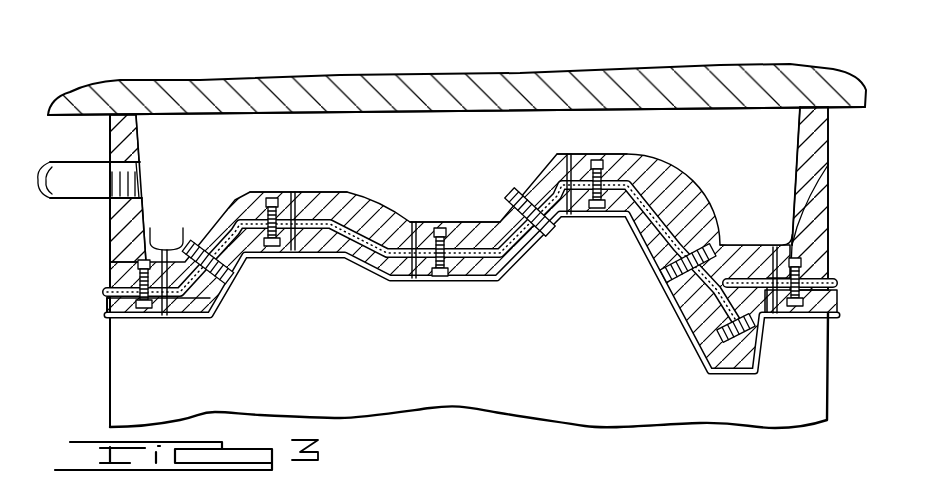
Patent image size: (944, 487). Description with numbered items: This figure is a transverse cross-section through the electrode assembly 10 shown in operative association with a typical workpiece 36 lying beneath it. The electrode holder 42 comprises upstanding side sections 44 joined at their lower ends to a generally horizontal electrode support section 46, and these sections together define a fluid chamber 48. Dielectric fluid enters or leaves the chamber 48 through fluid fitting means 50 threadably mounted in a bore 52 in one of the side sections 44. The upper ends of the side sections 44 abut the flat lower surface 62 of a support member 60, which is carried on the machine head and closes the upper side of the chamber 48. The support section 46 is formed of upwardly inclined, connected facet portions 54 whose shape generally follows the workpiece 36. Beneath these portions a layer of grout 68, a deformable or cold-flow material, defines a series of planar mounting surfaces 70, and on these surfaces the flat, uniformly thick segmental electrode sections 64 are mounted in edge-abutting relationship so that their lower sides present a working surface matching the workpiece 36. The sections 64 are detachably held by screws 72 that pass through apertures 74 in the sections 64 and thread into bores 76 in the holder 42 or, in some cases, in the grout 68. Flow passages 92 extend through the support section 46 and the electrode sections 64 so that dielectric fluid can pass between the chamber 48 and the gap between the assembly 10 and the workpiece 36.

The electrode assembly 10 is at (96, 229).
The workpiece 36 is at (576, 427).
The electrode holder 42 is at (145, 138).
The side sections 44 is at (805, 141).
The electrode support section 46 is at (370, 186).
The fluid chamber 48 is at (523, 148).
The fluid fitting means 50 is at (90, 142).
The bore 52 is at (140, 170).
The facet portions 54 is at (252, 215).
The support member 60 is at (358, 76).
The lower surface 62 is at (610, 110).
The segmental electrode sections 64 is at (132, 318).
The grout 68 is at (340, 192).
The mounting surfaces 70 is at (645, 198).
The screws 72 is at (272, 195).
The apertures 74 is at (490, 243).
The bores 76 is at (266, 202).
The flow passages 92 is at (412, 240).